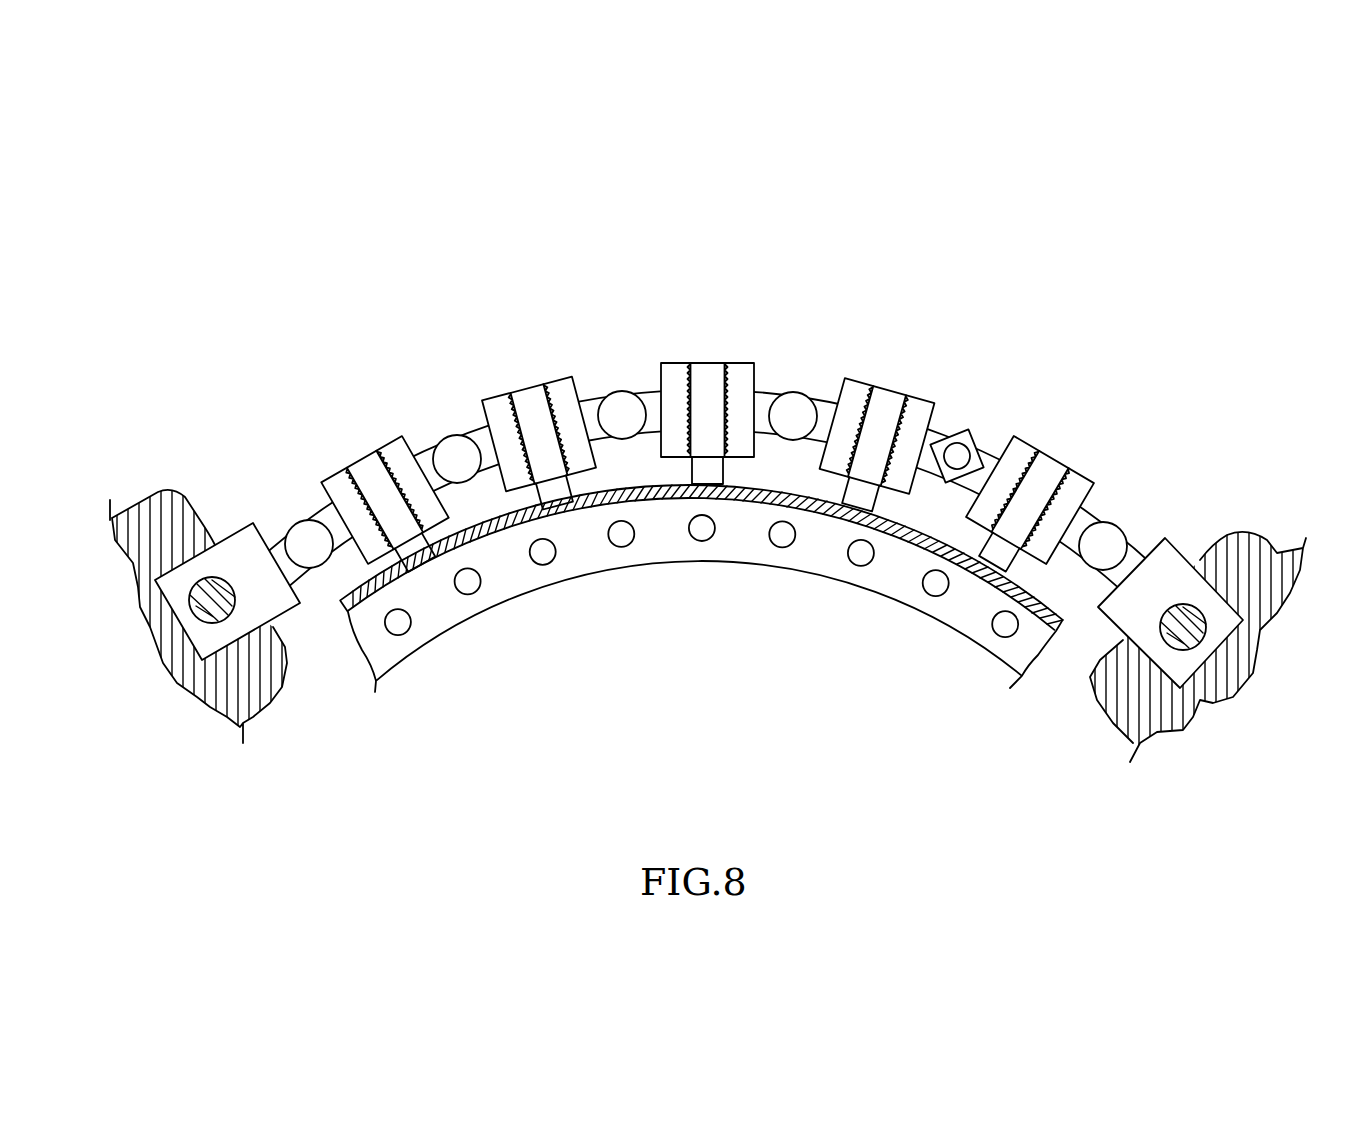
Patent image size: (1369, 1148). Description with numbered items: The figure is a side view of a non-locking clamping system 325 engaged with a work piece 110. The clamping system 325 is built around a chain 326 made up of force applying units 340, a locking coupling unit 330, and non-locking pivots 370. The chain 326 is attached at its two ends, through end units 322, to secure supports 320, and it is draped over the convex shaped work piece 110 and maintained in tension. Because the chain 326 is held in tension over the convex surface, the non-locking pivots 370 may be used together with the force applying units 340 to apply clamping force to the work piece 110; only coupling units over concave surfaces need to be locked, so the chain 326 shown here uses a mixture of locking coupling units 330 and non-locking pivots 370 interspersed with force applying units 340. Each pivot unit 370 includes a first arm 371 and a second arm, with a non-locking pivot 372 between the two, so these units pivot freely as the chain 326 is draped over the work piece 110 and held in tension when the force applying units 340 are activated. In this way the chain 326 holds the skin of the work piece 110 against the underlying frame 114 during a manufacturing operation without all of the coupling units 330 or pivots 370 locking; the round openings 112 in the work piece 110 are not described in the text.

The work piece 110 is at (1048, 680).
The mounting holes 112 is at (930, 548).
The underlying frame 114 is at (968, 645).
The secure support 320 is at (1303, 548).
The end unit 322 is at (287, 617).
The clamping system 325 is at (1080, 200).
The chain 326 is at (178, 463).
The locking coupling unit 330 is at (985, 418).
The force applying unit 340 is at (340, 440).
The non-locking pivot 370 is at (294, 496).
The first arm 371 is at (593, 397).
The non-locking pivot 372 is at (648, 393).